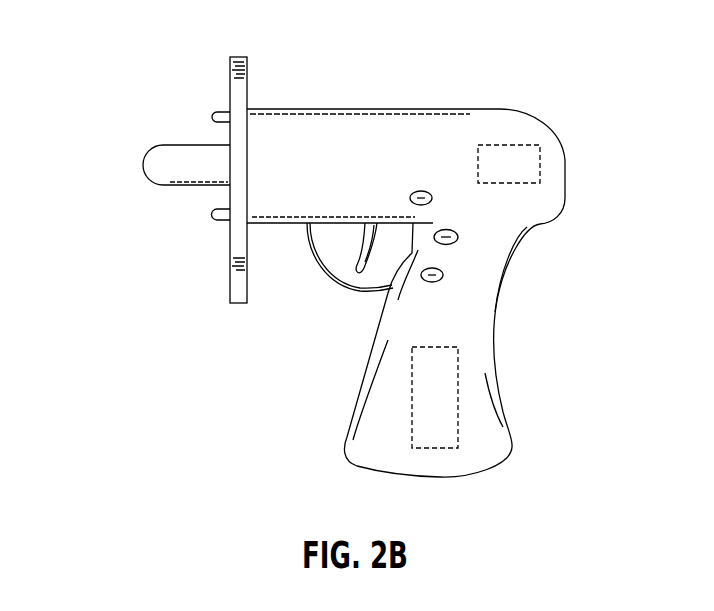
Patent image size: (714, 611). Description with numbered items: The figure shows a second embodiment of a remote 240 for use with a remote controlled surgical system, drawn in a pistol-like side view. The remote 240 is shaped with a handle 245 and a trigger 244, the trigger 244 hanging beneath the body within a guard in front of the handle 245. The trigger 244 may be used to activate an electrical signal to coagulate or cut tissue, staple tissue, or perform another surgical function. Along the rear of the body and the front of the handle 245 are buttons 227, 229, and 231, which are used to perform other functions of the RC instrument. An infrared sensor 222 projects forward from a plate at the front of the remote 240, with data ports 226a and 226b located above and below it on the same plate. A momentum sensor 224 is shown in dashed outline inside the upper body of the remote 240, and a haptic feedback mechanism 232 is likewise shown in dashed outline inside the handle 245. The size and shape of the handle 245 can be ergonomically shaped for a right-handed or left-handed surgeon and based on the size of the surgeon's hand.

The remote 240 is at (472, 34).
The infrared sensor 222 is at (143, 165).
The momentum sensor 224 is at (534, 158).
The data port 226a is at (212, 214).
The data port 226b is at (212, 117).
The button 227 is at (432, 198).
The button 229 is at (443, 276).
The button 231 is at (458, 238).
The haptic feedback mechanism 232 is at (450, 403).
The trigger 244 is at (367, 242).
The handle 245 is at (497, 361).